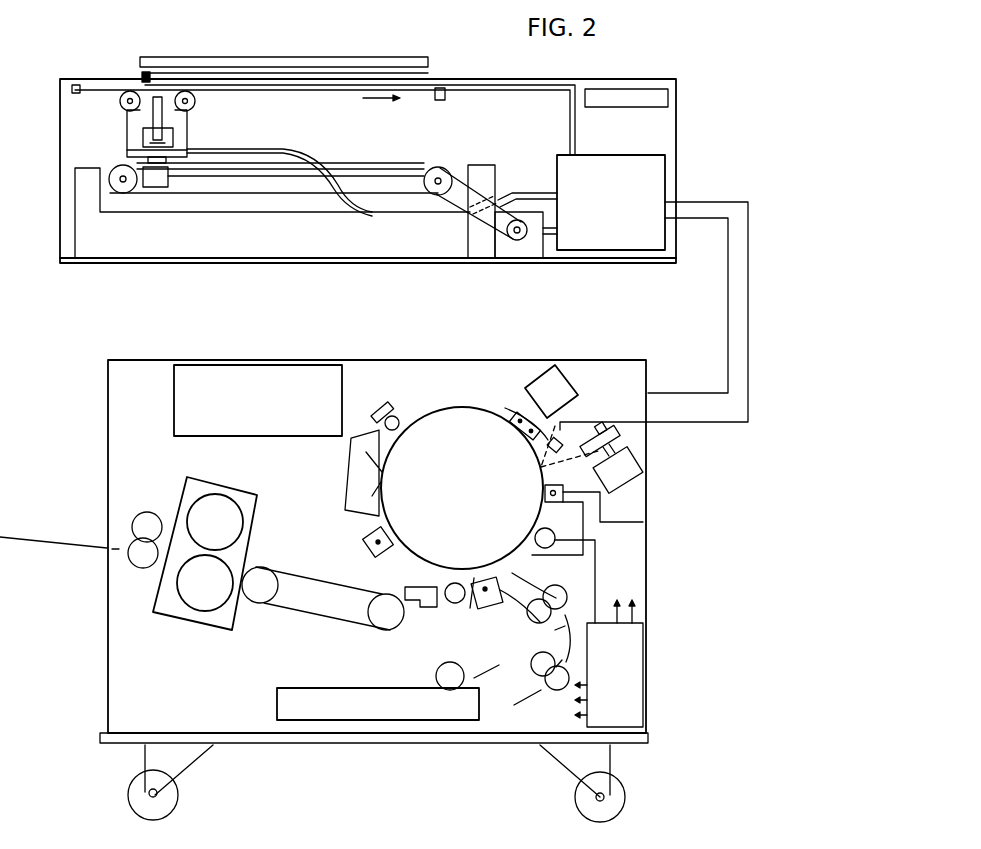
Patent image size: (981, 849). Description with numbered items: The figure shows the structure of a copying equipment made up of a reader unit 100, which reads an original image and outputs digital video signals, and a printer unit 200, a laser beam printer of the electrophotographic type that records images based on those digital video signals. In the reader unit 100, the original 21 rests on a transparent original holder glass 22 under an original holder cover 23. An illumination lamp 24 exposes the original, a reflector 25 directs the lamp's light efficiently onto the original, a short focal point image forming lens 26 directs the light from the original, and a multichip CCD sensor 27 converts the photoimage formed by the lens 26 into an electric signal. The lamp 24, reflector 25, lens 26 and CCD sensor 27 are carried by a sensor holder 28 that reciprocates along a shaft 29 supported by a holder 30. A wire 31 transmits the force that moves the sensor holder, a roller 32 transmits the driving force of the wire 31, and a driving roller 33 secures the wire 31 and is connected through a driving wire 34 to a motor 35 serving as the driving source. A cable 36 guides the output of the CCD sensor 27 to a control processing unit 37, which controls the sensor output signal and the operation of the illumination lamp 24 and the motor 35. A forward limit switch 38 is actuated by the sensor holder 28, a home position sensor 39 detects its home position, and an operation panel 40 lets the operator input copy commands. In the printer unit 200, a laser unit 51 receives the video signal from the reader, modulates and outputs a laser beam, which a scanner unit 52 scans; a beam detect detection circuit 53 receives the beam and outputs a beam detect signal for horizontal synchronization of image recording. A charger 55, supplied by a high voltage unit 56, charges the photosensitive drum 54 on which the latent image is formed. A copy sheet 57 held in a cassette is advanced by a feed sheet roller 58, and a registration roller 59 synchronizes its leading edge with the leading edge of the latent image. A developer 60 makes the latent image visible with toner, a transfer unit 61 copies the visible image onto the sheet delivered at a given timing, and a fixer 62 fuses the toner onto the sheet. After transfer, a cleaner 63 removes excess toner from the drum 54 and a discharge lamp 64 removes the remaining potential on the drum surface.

The reader unit 100 is at (654, 79).
The printer unit 200 is at (633, 360).
The original 21 is at (142, 75).
The transparent original holder glass 22 is at (292, 91).
The original holder cover 23 is at (185, 60).
The illumination lamp 24 is at (195, 101).
The reflector 25 is at (120, 103).
The short focal point image forming lens 26 is at (156, 97).
The multichip CCD sensor 27 is at (172, 146).
The sensor holder 28 is at (127, 127).
The shaft 29 is at (392, 176).
The holder 30 is at (107, 243).
The wire 31 is at (228, 196).
The roller 32 is at (110, 172).
The driving roller 33 is at (441, 167).
The driving wire 34 is at (483, 229).
The motor 35 is at (522, 252).
The cable 36 is at (285, 151).
The control processing unit 37 is at (600, 155).
The forward limit switch 38 is at (440, 88).
The home position sensor 39 is at (75, 85).
The operation panel 40 is at (668, 98).
The laser unit 51 is at (578, 388).
The scanner unit 52 is at (640, 460).
The BD detection circuit 53 is at (540, 448).
The photosensitive drum 54 is at (436, 408).
The charger 55 is at (512, 416).
The high voltage unit 56 is at (634, 653).
The copy sheet 57 is at (315, 686).
The feed sheet roller 58 is at (436, 676).
The registration roller 59 is at (530, 626).
The developer 60 is at (585, 524).
The transfer unit 61 is at (422, 607).
The fixer 62 is at (262, 468).
The cleaner 63 is at (348, 488).
The discharge lamp 64 is at (376, 404).